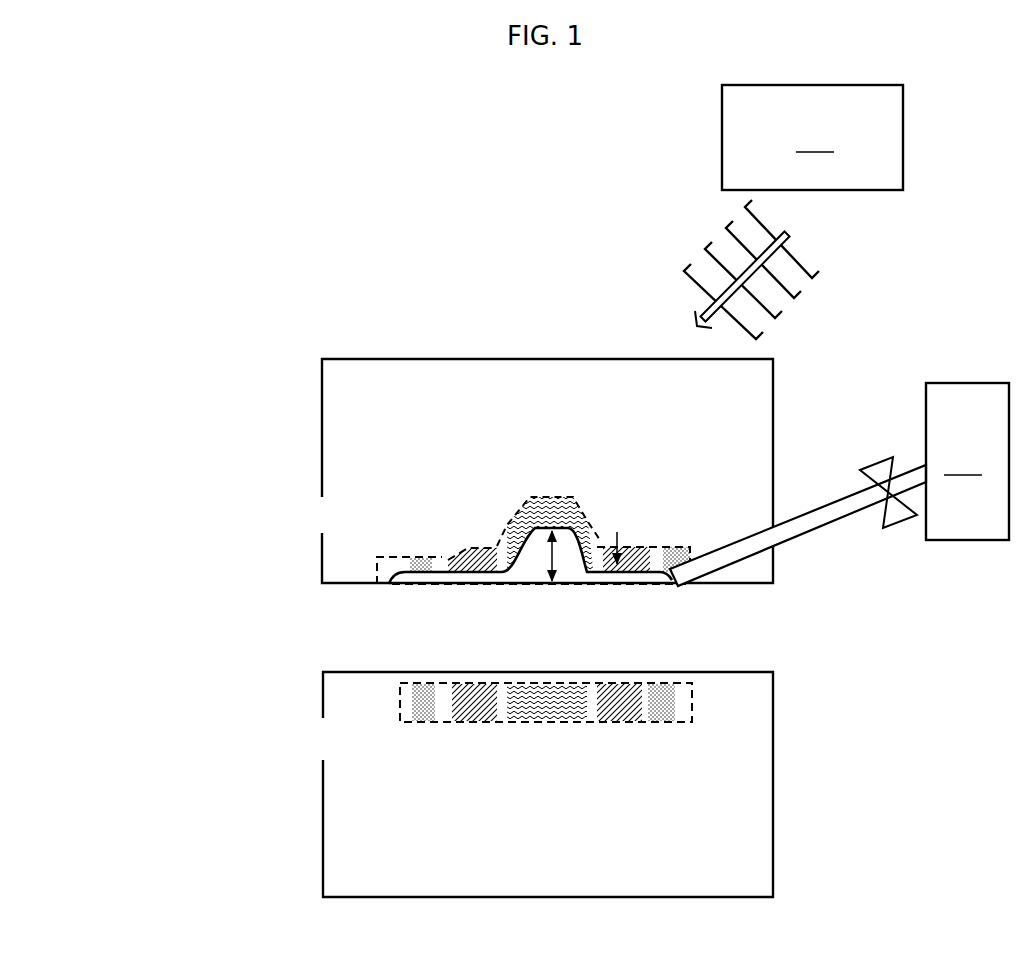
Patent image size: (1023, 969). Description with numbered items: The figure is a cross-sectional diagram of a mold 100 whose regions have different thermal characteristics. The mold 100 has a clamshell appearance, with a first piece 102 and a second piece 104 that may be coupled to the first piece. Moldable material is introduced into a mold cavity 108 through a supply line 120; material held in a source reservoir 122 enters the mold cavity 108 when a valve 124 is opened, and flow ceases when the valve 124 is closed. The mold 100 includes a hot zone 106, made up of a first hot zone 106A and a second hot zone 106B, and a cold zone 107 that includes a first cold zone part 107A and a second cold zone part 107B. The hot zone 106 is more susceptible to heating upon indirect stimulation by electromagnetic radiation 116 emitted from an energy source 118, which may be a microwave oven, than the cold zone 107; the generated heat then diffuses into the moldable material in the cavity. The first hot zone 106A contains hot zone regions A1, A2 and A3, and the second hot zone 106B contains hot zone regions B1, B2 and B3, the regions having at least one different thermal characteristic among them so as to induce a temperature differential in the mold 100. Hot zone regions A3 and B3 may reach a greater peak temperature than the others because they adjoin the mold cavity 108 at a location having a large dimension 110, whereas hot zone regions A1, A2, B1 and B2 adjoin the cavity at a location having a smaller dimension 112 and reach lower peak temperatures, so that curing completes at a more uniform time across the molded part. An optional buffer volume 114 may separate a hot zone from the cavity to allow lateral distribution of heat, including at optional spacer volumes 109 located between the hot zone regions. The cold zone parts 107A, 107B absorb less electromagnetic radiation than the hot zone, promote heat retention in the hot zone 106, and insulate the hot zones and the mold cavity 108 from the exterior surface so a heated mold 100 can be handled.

The mold 100 is at (229, 217).
The first piece 102 is at (319, 472).
The second piece 104 is at (320, 785).
The hot zone 106 is at (397, 692).
The first hot zone 106A is at (388, 552).
The second hot zone 106B is at (503, 738).
The cold zone 107 is at (777, 713).
The first cold zone part 107A is at (777, 440).
The second cold zone part 107B is at (779, 787).
The mold cavity 108 is at (479, 587).
The spacer volumes 109 is at (498, 521).
The large dimension 110 is at (547, 547).
The smaller dimension 112 is at (617, 587).
The buffer volume 114 is at (458, 671).
The electromagnetic radiation 116 is at (707, 240).
The energy source 118 is at (812, 137).
The supply line 120 is at (808, 506).
The source reservoir 122 is at (967, 461).
The valve 124 is at (877, 459).
The hot zone region A1 is at (427, 555).
The hot zone region A2 is at (483, 546).
The hot zone region A3 is at (555, 492).
The hot zone region B1 is at (426, 725).
The hot zone region B2 is at (473, 725).
The hot zone region B3 is at (547, 725).